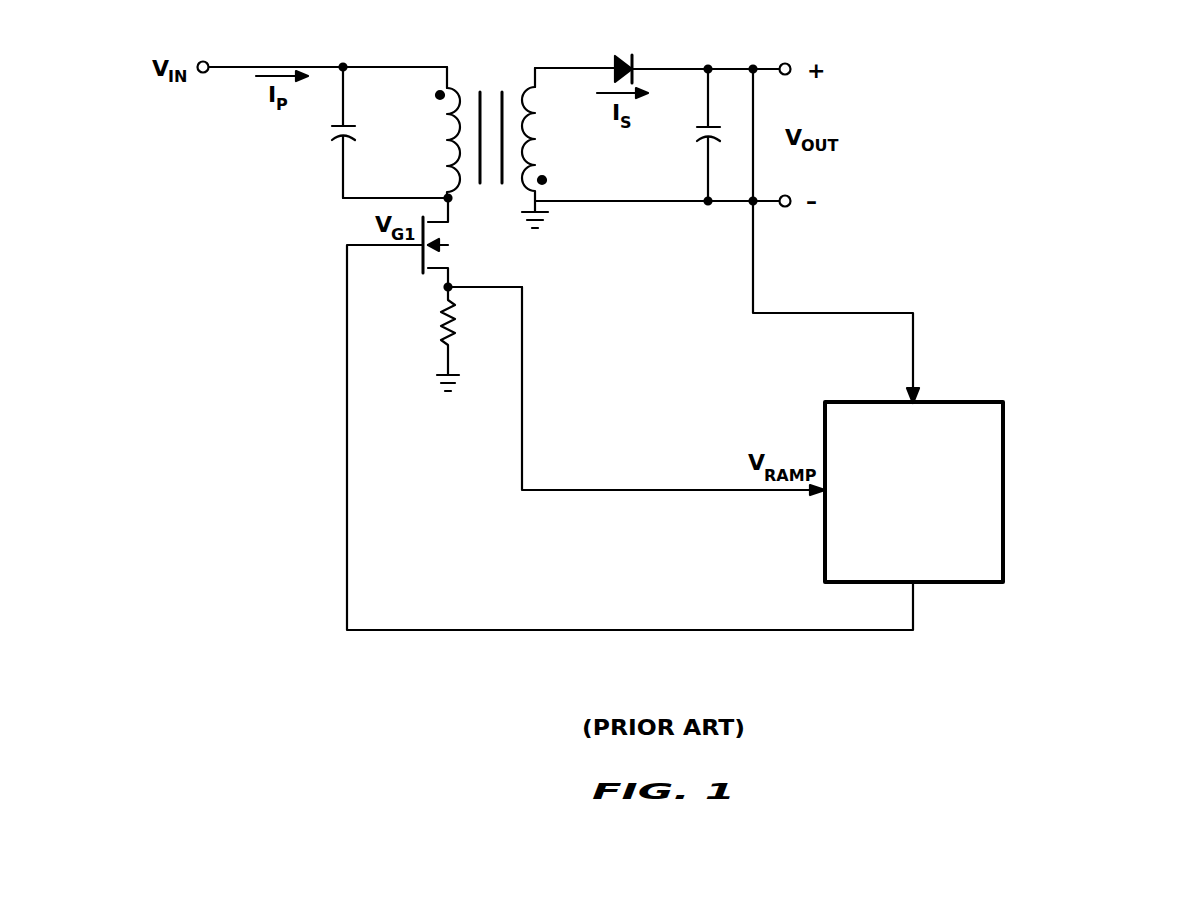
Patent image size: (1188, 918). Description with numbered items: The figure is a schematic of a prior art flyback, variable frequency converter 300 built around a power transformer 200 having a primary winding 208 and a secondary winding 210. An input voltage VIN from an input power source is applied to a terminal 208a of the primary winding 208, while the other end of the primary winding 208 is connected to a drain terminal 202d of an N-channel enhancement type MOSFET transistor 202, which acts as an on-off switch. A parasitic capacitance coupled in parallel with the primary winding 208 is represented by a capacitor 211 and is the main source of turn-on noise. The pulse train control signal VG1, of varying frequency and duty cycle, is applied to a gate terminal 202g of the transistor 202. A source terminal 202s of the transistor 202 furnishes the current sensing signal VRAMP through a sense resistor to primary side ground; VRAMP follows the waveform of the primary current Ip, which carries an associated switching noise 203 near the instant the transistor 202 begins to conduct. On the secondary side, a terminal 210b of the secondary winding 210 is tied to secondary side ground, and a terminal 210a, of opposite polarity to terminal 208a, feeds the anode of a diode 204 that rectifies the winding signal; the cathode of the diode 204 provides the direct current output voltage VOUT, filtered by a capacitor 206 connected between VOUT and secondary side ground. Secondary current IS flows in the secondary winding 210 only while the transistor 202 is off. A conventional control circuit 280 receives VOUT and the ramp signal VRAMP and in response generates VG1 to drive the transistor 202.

The power transformer 200 is at (490, 88).
The transistor 202 is at (424, 282).
The gate terminal 202g is at (376, 243).
The drain terminal 202d is at (450, 221).
The source terminal 202s is at (445, 280).
The switching noise 203 is at (450, 320).
The diode 204 is at (620, 63).
The capacitor 206 is at (697, 128).
The primary winding 208 is at (410, 116).
The terminal of primary winding 208a is at (447, 68).
The secondary winding 210 is at (585, 132).
The terminal of secondary winding 210a is at (536, 66).
The terminal of secondary winding 210b is at (537, 197).
The capacitor 211 is at (332, 128).
The control circuit 280 is at (972, 402).
The flyback converter 300 is at (1063, 141).